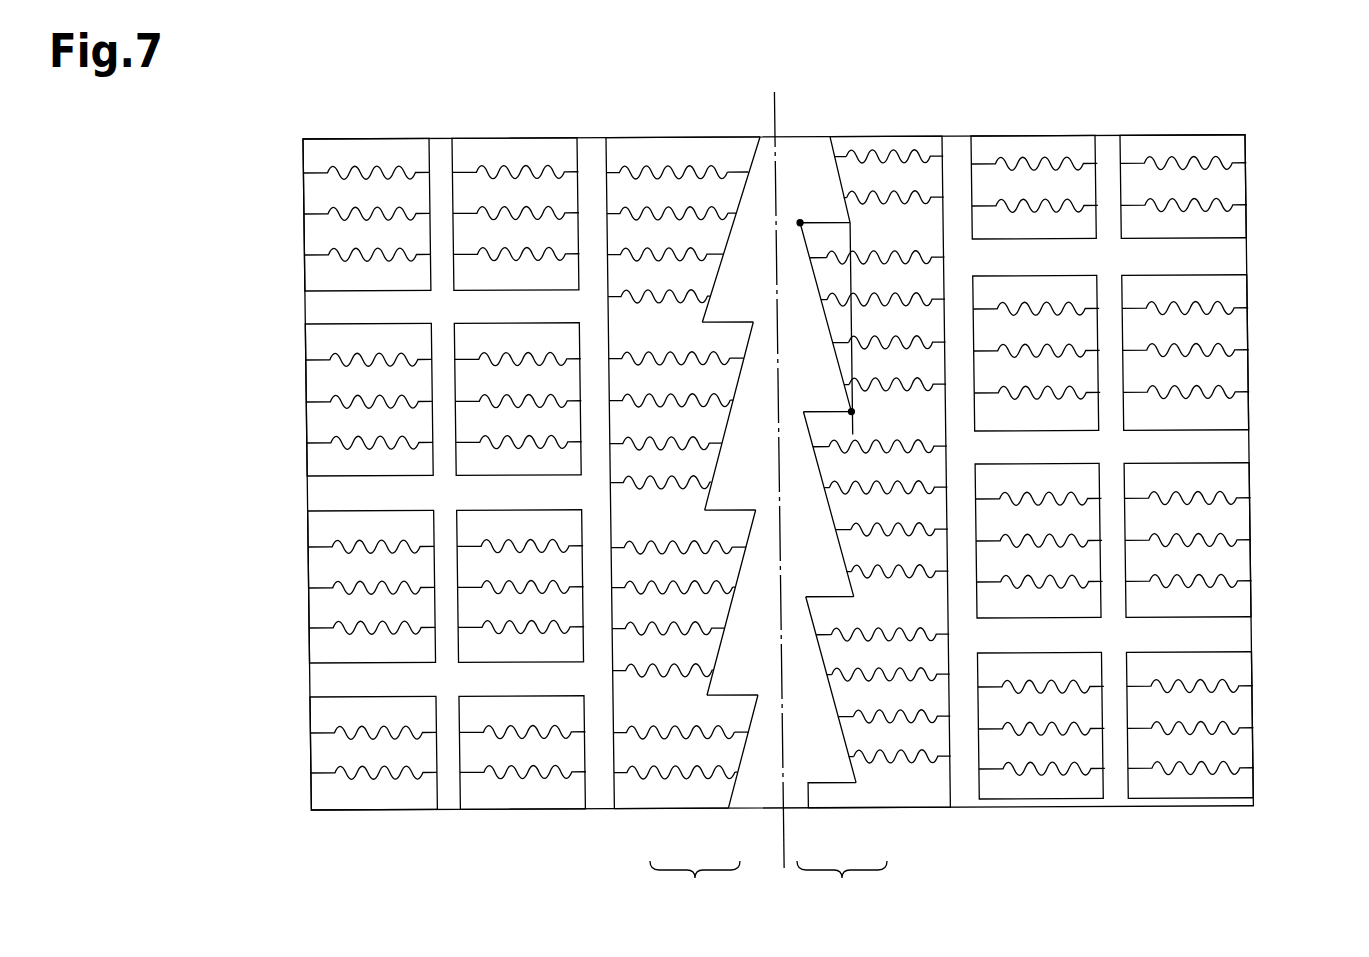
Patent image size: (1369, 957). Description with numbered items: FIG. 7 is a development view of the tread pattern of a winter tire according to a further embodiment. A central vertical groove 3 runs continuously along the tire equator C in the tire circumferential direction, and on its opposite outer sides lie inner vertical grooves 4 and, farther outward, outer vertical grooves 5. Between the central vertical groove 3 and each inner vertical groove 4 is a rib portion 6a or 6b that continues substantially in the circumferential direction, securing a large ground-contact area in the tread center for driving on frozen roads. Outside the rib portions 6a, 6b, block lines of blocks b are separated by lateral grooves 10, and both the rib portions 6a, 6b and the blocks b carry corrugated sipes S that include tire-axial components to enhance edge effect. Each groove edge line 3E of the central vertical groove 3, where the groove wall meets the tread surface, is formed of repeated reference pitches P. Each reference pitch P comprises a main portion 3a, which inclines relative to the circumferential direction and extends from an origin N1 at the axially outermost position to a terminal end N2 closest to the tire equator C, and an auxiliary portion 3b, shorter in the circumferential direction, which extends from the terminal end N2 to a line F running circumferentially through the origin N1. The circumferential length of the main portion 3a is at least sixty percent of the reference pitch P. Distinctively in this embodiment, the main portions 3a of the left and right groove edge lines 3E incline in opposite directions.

The lateral groove 10 is at (1213, 264).
The block b is at (377, 143).
The sipe S is at (322, 173).
The inner vertical groove 4 is at (597, 795).
The outer vertical groove 5 is at (448, 805).
The rib portion 6a is at (913, 143).
The rib portion 6b is at (648, 148).
The central vertical groove 3 is at (768, 484).
The main portion 3a is at (727, 660).
The auxiliary portion 3b is at (745, 690).
The groove edge line 3E is at (745, 157).
The reference pitch P is at (768, 884).
The tire equator C is at (774, 465).
The line in the tire circumferential direction F is at (852, 243).
The origin N1 is at (850, 410).
The terminal end N2 is at (798, 224).